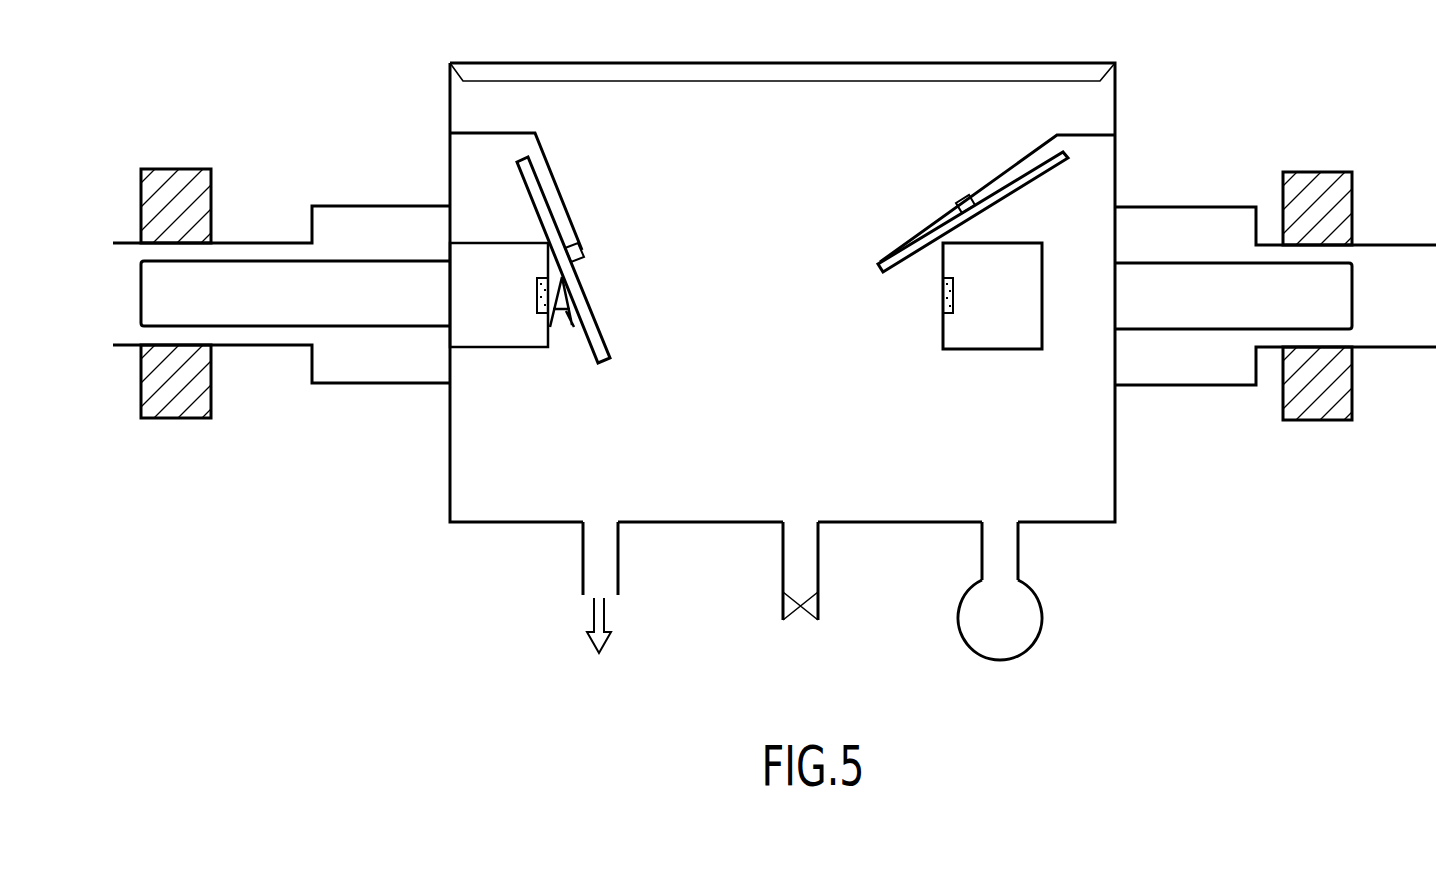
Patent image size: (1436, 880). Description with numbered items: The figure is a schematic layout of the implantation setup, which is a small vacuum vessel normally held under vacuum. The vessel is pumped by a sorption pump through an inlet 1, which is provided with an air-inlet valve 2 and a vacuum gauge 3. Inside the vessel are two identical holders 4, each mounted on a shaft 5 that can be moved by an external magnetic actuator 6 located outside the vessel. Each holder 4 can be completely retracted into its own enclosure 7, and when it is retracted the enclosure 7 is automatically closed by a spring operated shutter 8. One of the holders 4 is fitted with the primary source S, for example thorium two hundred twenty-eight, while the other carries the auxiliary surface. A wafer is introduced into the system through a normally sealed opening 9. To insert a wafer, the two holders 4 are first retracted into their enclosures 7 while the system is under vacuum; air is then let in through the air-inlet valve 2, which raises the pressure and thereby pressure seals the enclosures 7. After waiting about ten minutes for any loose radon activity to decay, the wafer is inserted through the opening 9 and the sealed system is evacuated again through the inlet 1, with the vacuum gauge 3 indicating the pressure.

The inlet 1 is at (613, 694).
The air-inlet valve 2 is at (813, 668).
The vacuum gauge 3 is at (993, 703).
The holder 4 is at (987, 308).
The shaft 5 is at (1205, 310).
The external magnetic actuator 6 is at (1327, 172).
The enclosure 7 is at (1172, 246).
The spring operated shutter 8 is at (975, 173).
The normally sealed opening 9 is at (948, 48).
The primary source S is at (936, 294).